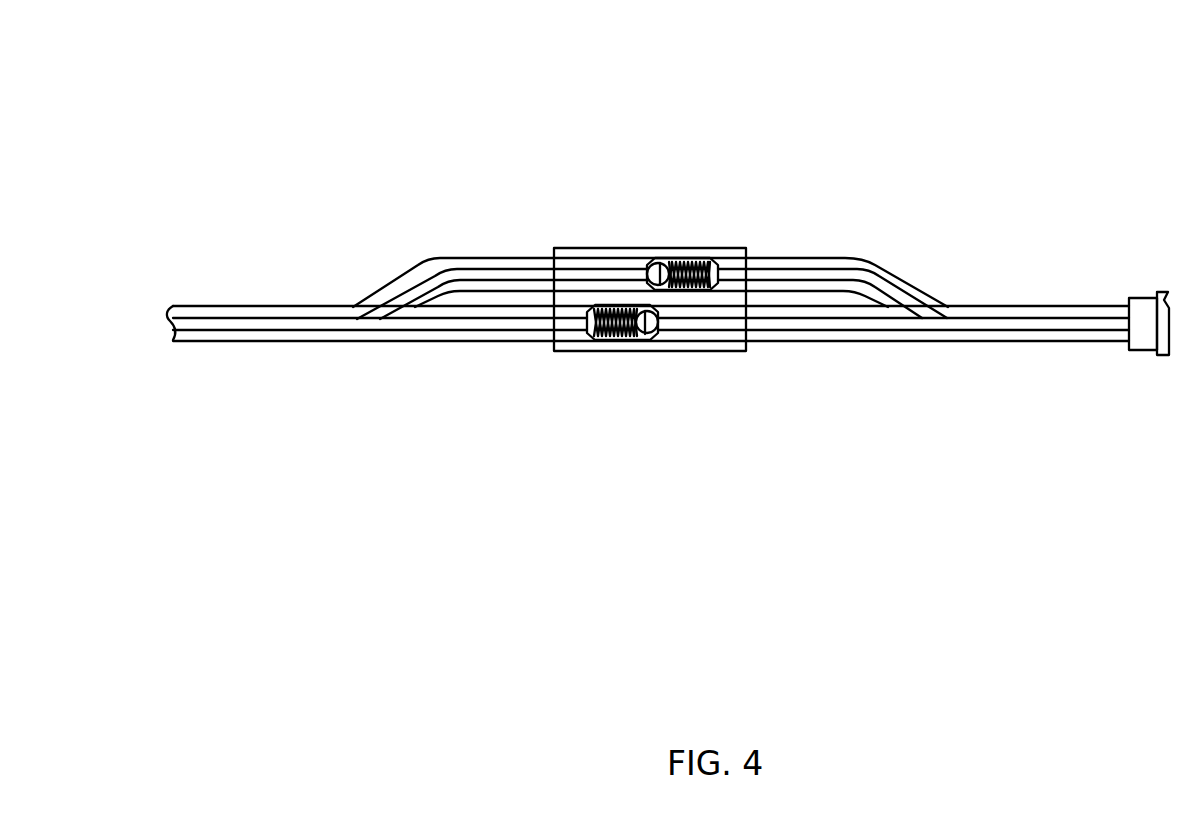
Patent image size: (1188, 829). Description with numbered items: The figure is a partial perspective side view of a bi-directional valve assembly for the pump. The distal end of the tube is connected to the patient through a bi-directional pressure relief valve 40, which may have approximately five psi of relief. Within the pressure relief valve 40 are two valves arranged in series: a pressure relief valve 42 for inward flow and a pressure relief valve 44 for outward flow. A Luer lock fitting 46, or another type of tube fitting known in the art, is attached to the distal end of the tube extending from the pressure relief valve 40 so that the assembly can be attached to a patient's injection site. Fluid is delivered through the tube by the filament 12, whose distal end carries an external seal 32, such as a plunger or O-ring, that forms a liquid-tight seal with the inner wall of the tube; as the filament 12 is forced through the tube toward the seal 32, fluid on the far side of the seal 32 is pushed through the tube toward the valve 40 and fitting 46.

The filament 12 is at (308, 330).
The external seal 32 is at (650, 464).
The bi-directional pressure relief valve 40 is at (658, 262).
The pressure relief valve for inward flow 42 is at (702, 262).
The pressure relief valve for outward flow 44 is at (613, 338).
The Luer lock fitting 46 is at (1142, 348).